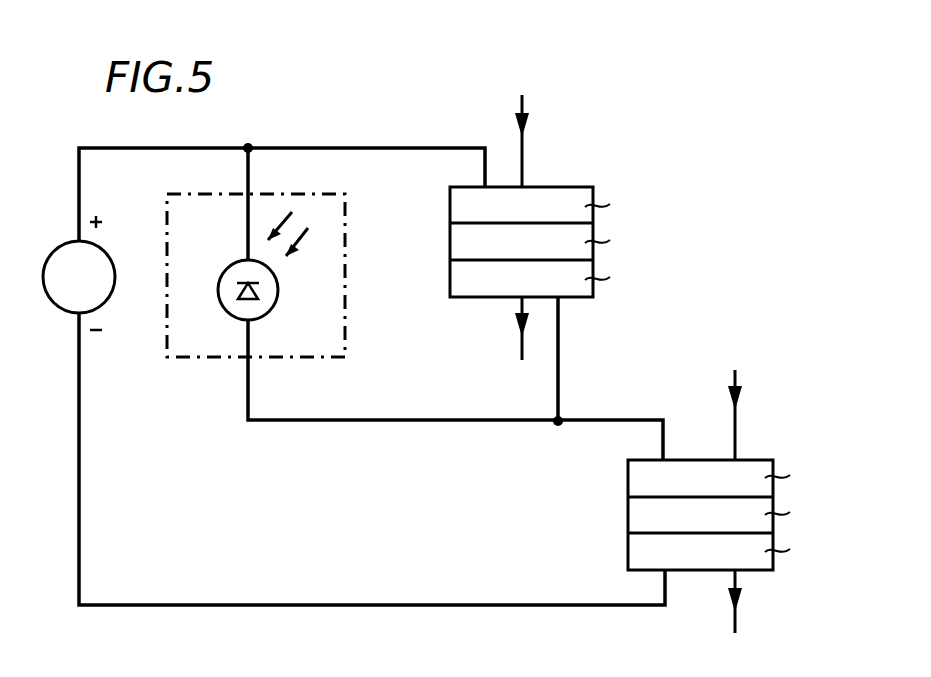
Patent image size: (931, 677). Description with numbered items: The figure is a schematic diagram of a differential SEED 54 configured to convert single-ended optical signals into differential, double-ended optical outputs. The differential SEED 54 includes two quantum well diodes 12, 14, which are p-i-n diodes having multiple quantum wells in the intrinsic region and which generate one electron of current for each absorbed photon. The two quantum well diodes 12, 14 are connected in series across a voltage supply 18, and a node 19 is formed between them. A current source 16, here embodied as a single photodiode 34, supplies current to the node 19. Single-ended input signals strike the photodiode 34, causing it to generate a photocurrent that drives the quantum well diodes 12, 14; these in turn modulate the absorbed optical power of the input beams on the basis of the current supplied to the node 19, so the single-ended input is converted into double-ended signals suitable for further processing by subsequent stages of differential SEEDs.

The differential SEED 54 is at (196, 133).
The voltage supply 18 is at (60, 298).
The current source 16 is at (187, 357).
The photodiode 34 is at (228, 278).
The quantum well diode 12 is at (588, 152).
The quantum well diode 14 is at (776, 436).
The node 19 is at (554, 426).